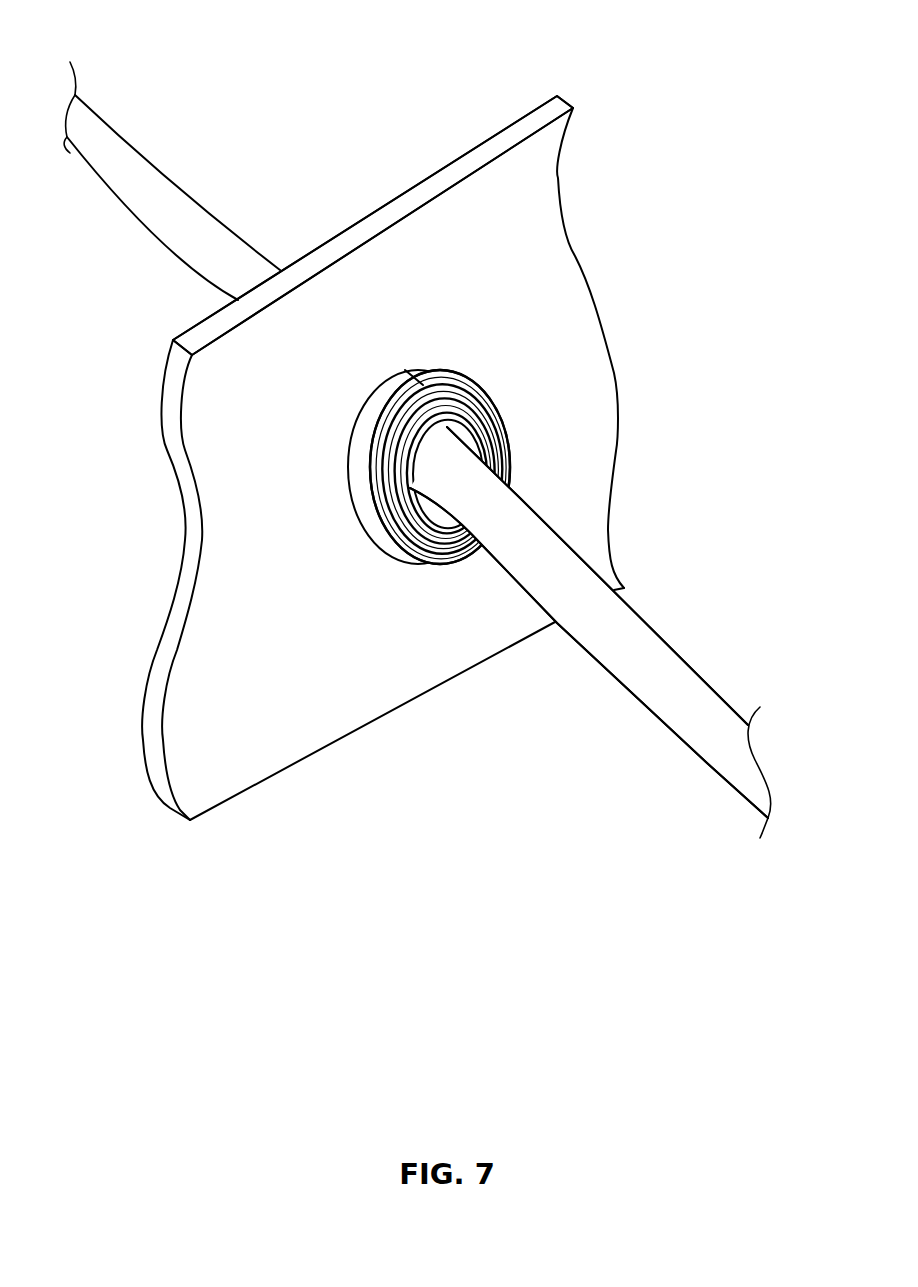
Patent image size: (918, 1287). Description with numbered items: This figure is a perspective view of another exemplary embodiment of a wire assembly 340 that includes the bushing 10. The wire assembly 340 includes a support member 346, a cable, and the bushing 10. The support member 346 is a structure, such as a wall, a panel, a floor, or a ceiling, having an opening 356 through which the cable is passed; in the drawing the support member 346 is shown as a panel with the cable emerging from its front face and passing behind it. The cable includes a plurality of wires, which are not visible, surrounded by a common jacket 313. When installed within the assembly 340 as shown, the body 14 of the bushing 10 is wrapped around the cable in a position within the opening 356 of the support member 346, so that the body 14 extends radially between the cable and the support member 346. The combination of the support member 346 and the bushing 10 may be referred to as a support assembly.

The bushing 10 is at (452, 371).
The body 14 is at (422, 375).
The common jacket 313 is at (712, 753).
The wire assembly 340 is at (655, 162).
The support member 346 is at (488, 182).
The opening 356 is at (357, 456).